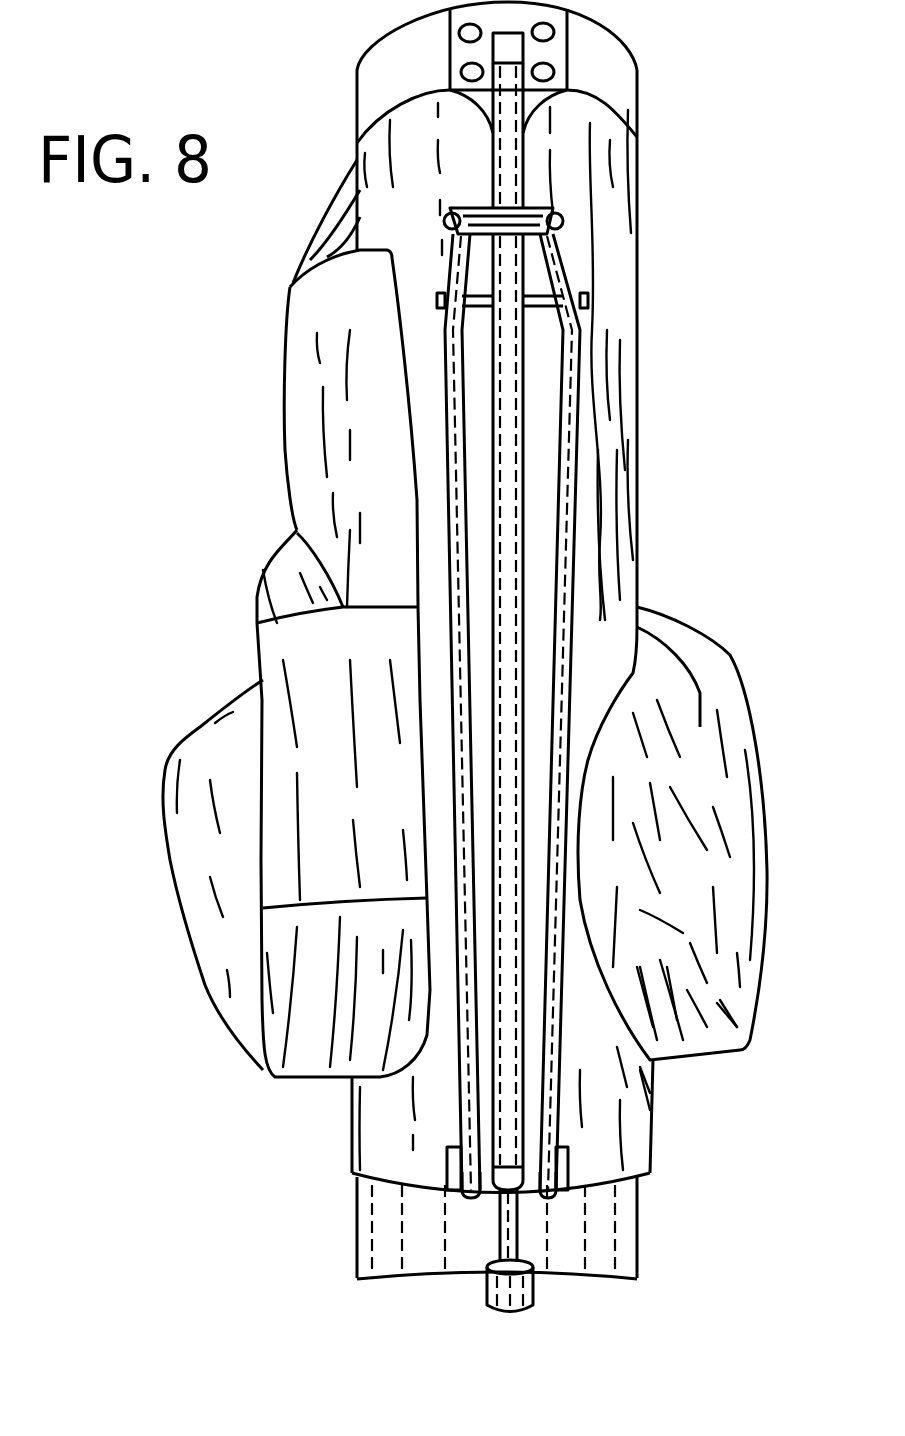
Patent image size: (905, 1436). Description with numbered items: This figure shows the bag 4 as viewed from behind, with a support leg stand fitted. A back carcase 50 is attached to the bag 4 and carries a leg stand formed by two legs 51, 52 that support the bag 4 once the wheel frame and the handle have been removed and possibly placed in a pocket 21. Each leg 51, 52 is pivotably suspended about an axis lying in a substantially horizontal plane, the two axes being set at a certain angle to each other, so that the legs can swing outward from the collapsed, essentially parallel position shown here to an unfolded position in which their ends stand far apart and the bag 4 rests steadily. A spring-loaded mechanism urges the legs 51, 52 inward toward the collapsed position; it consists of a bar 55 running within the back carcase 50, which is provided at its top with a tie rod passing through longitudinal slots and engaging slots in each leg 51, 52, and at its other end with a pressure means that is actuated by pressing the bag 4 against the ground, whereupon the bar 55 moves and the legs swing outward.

The bag 4 is at (612, 520).
The pocket 21 is at (367, 537).
The back carcase 50 is at (457, 380).
The leg 51 is at (557, 893).
The leg 52 is at (498, 836).
The bar 55 is at (510, 1243).